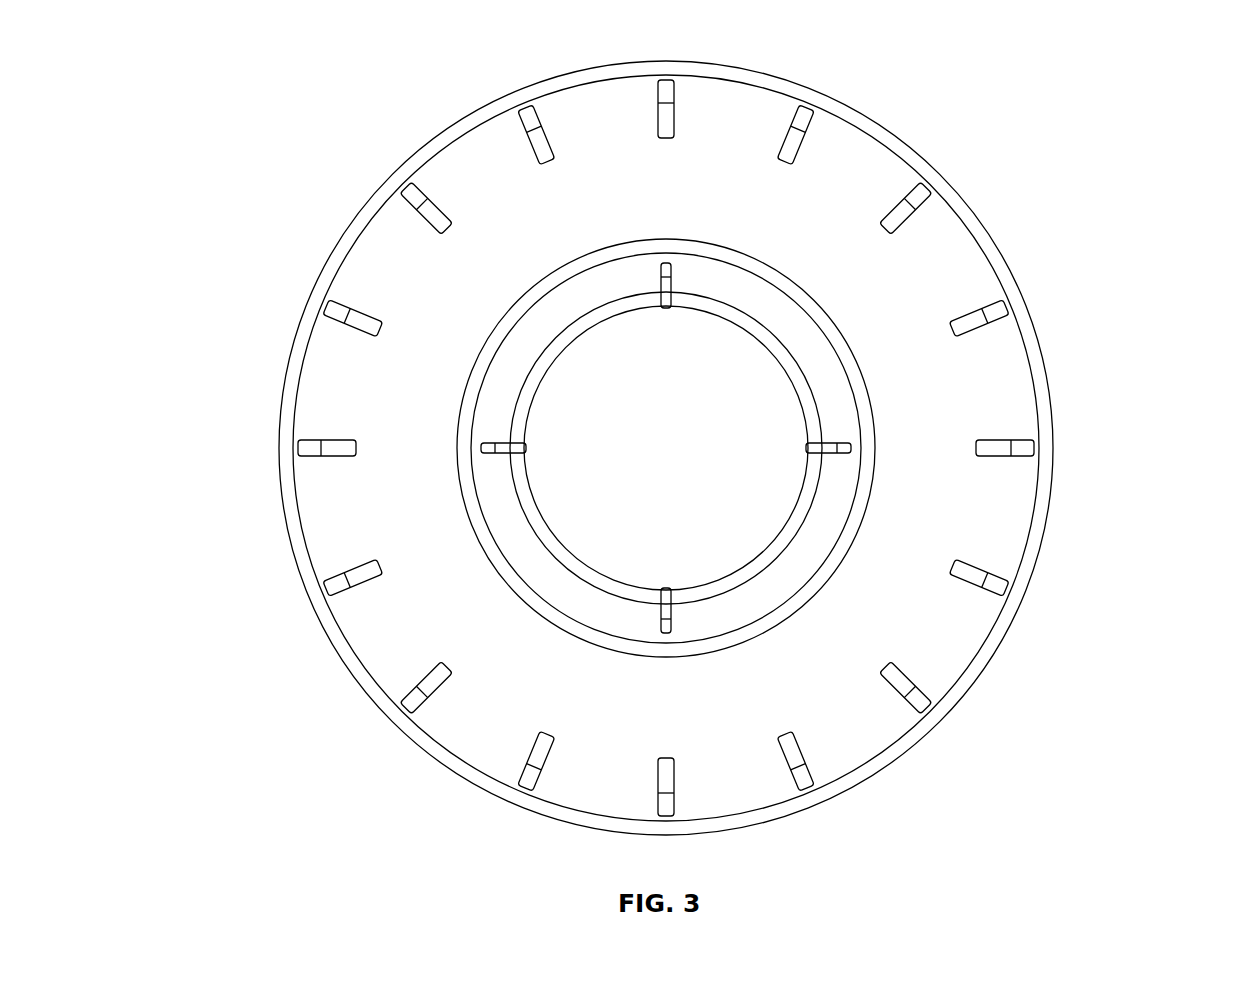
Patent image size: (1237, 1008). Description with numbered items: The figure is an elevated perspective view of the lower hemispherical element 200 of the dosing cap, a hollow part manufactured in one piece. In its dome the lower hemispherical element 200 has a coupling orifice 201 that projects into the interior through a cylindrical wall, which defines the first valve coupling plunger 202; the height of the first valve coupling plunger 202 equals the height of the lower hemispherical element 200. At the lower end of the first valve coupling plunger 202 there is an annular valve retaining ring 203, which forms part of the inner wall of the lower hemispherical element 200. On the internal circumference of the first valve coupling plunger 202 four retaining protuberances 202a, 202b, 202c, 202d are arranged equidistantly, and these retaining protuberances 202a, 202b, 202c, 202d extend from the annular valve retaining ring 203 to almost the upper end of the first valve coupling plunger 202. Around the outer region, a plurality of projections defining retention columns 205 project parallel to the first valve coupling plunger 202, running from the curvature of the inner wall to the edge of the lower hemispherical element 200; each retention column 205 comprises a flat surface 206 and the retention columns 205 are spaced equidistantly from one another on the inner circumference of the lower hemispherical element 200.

The lower hemispherical element 200 is at (574, 448).
The coupling orifice 201 is at (666, 448).
The first valve coupling plunger 202 is at (877, 436).
The retaining protuberance 202a is at (663, 258).
The retaining protuberance 202b is at (482, 445).
The retaining protuberance 202c is at (833, 455).
The retaining protuberance 202d is at (675, 625).
The annular valve retaining ring 203 is at (748, 308).
The retention column 205 is at (994, 185).
The flat surface 206 is at (932, 190).